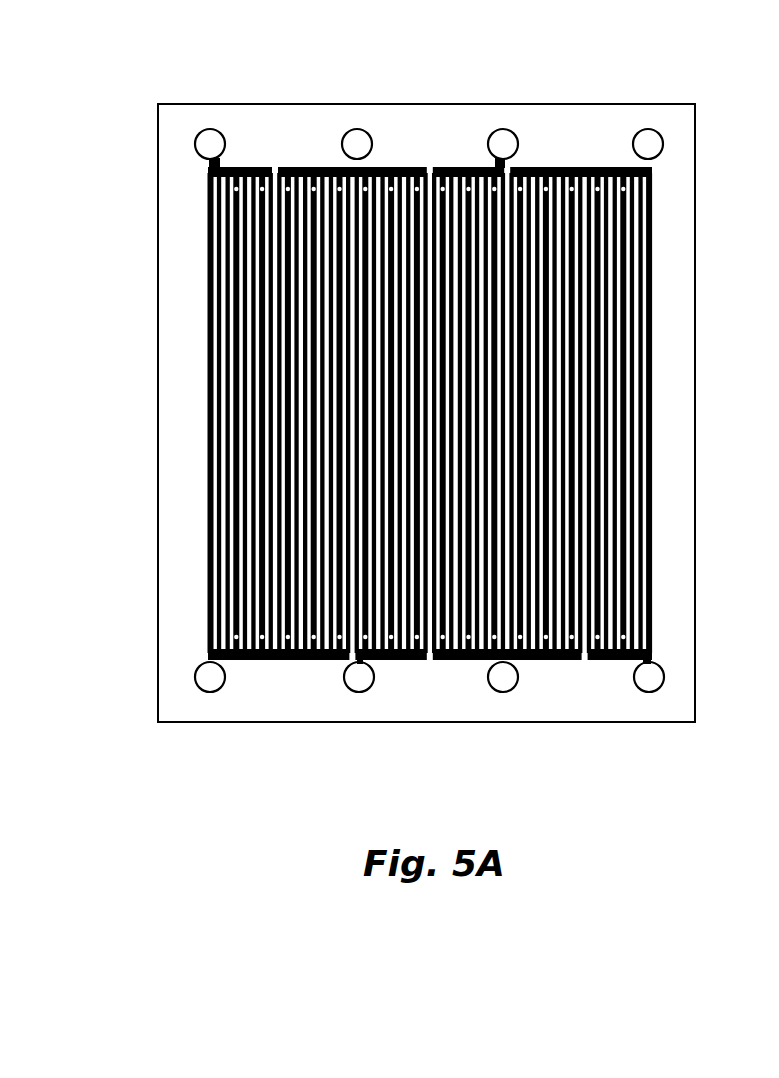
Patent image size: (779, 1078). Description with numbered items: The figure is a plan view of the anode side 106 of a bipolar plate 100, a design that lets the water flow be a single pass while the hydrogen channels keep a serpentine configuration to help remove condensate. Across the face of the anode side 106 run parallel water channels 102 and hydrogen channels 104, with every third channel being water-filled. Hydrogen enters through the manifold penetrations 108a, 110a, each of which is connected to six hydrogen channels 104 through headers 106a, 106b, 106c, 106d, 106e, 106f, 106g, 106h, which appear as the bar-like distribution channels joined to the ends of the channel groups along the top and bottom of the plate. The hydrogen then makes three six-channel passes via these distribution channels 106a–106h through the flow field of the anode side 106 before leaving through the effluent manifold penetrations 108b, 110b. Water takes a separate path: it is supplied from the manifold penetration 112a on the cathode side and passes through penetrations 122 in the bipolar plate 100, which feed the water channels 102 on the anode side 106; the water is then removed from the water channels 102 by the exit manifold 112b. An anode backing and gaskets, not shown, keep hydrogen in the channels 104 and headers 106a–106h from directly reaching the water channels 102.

The bipolar plate 100 is at (163, 742).
The water channels 102 is at (227, 257).
The hydrogen channels 104 is at (202, 326).
The anode side 106 is at (542, 118).
The header 106a is at (585, 159).
The header 106b is at (447, 159).
The header 106c is at (313, 158).
The header 106d is at (242, 158).
The header 106e is at (599, 652).
The header 106f is at (458, 652).
The header 106g is at (400, 652).
The header 106h is at (257, 652).
The manifold penetration 108a is at (200, 122).
The effluent manifold penetration 108b is at (347, 680).
The manifold penetration 110a is at (496, 121).
The effluent manifold penetration 110b is at (636, 680).
The manifold penetration 112a is at (349, 121).
The exit manifold 112b is at (492, 685).
The penetrations 122 is at (620, 181).